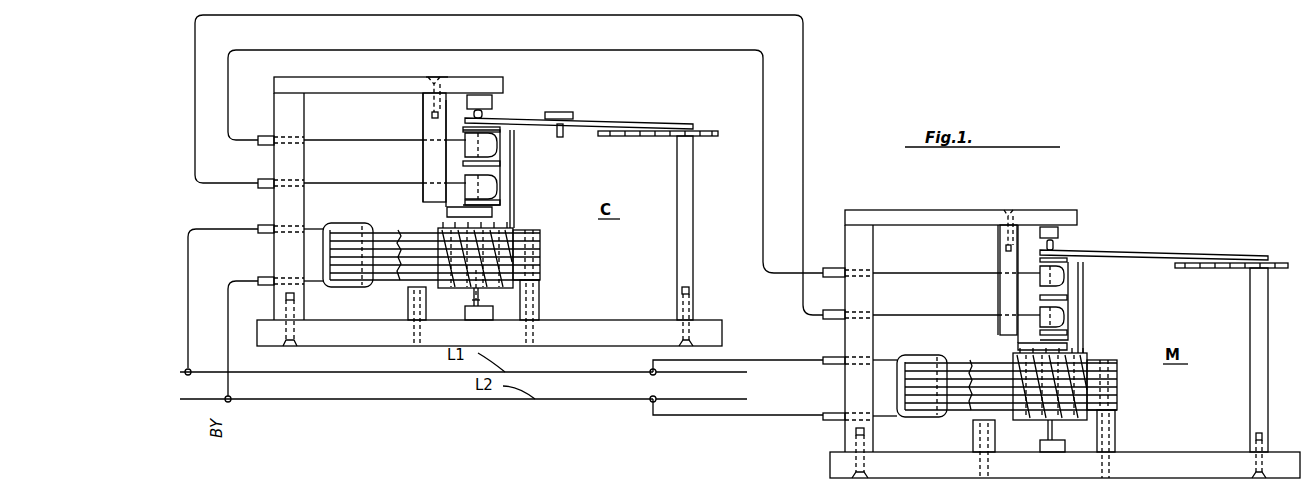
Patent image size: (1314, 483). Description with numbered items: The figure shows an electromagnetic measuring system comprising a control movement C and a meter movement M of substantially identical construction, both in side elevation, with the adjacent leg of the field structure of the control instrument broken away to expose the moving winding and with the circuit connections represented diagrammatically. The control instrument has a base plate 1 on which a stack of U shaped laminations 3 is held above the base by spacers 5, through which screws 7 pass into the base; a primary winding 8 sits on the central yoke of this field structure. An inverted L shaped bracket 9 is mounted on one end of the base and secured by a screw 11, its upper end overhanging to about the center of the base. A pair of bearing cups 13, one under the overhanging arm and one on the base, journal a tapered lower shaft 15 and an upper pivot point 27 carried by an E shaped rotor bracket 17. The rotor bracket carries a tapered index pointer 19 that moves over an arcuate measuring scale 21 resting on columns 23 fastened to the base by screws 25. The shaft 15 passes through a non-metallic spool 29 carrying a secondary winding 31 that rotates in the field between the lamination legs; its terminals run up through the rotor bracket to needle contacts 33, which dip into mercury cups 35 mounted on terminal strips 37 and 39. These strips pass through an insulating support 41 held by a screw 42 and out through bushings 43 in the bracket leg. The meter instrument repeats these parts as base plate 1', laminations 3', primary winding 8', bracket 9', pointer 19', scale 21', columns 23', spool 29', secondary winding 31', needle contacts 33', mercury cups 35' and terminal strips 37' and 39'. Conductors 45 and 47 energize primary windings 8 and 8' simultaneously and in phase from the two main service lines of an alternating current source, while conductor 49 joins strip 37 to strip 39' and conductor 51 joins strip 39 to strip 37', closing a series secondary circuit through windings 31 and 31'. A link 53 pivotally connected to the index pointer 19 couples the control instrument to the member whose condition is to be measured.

The base plate 1 is at (489, 317).
The base plate 1' is at (1065, 451).
The U shaped laminations 3 is at (549, 255).
The U shaped laminations 3' is at (1121, 385).
The spacers 5 is at (405, 303).
The screws 7 is at (405, 228).
The primary winding 8 is at (348, 242).
The primary winding 8' is at (1007, 371).
The L shaped bracket 9 is at (370, 198).
The L shaped bracket 9' is at (942, 344).
The screw 11 is at (292, 346).
The bearing cups 13 is at (465, 315).
The shaft 15 is at (473, 298).
The E shaped rotor bracket 17 is at (505, 165).
The index pointer 19 is at (579, 108).
The index pointer 19' is at (1154, 239).
The measuring scale 21 is at (676, 118).
The measuring scale 21' is at (1244, 255).
The columns 23 is at (708, 228).
The columns 23' is at (1282, 373).
The screws 25 is at (692, 298).
The pivot point 27 is at (484, 114).
The spool 29 is at (496, 290).
The spool 29' is at (1036, 436).
The secondary winding 31 is at (497, 243).
The secondary winding 31' is at (1026, 375).
The needle contacts 33 is at (473, 161).
The needle contacts 33' is at (1043, 293).
The mercury cups 35 is at (472, 168).
The mercury cups 35' is at (1050, 289).
The terminal strip 37 is at (370, 131).
The terminal strip 37' is at (942, 263).
The terminal strip 39 is at (370, 172).
The terminal strip 39' is at (942, 305).
The support 41 is at (430, 158).
The screw 42 is at (432, 108).
The bushings 43 is at (264, 178).
The conductor 45 is at (186, 320).
The conductor 47 is at (226, 325).
The conductor 49 is at (232, 100).
The conductor 51 is at (182, 78).
The link 53 is at (568, 112).